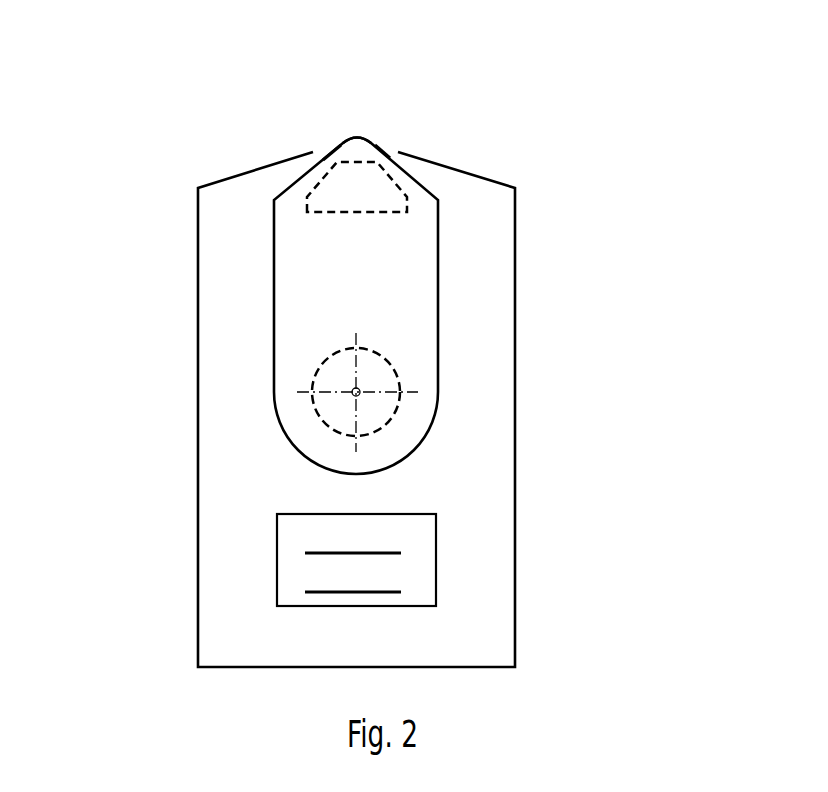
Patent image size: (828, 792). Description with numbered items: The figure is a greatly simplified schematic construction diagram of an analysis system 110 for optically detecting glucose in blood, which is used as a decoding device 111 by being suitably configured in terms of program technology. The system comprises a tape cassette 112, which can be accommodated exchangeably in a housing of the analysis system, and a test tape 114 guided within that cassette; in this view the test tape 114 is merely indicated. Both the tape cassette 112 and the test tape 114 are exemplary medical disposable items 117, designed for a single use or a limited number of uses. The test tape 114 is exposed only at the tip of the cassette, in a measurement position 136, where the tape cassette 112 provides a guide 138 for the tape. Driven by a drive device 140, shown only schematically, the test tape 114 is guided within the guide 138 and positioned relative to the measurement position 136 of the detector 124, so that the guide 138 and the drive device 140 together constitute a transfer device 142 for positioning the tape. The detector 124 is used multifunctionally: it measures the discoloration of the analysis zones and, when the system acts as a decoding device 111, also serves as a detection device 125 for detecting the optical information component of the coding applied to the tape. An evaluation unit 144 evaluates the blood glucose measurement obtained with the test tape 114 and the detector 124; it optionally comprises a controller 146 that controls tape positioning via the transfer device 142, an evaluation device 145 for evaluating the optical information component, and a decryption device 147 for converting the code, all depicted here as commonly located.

The analysis system 110 is at (458, 367).
The decoding device 111 is at (587, 187).
The tape cassette 112 is at (300, 307).
The test tape 114 is at (367, 140).
The medical disposable item 117 is at (276, 259).
The detector 124 is at (472, 256).
The detection device 125 is at (370, 228).
The measurement position 136 is at (348, 112).
The guide 138 is at (311, 133).
The drive device 140 is at (400, 432).
The transfer device 142 is at (408, 293).
The evaluation unit 144 is at (353, 537).
The evaluation device 145 is at (353, 537).
The controller 146 is at (353, 576).
The decryption device 147 is at (353, 576).